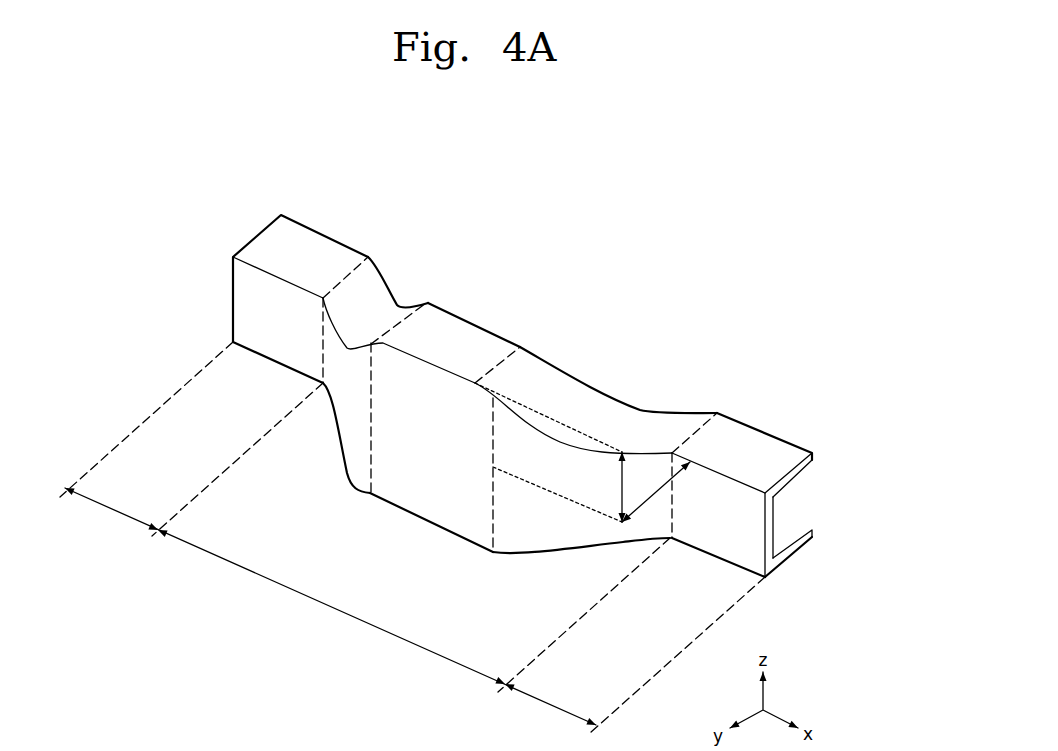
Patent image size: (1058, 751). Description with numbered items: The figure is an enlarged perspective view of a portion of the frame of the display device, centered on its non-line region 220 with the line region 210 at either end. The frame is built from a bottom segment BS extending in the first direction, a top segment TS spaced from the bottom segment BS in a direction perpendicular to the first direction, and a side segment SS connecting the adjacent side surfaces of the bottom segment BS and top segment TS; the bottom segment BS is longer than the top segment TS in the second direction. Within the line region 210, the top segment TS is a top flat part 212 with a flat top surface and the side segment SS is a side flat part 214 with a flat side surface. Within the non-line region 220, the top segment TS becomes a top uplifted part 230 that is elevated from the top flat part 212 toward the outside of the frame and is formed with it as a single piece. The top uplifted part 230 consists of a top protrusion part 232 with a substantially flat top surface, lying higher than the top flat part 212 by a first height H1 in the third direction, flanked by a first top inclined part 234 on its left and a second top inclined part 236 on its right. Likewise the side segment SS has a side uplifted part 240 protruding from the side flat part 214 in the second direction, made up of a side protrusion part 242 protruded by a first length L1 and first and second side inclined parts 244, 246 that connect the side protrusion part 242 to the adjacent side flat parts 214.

The line region 210 is at (412, 474).
The top flat part 212 is at (321, 245).
The side flat part 214 is at (281, 347).
The non-line region 220 is at (408, 467).
The top uplifted part 230 is at (661, 323).
The top protrusion part 232 is at (465, 333).
The first top inclined part 234 is at (373, 313).
The second top inclined part 236 is at (605, 410).
The side uplifted part 240 is at (503, 615).
The side protrusion part 242 is at (442, 467).
The first side inclined part 244 is at (347, 408).
The second side inclined part 246 is at (574, 527).
The top segment TS is at (796, 475).
The side segment SS is at (790, 510).
The bottom segment BS is at (796, 545).
The first height H1 is at (559, 452).
The first length L1 is at (660, 492).